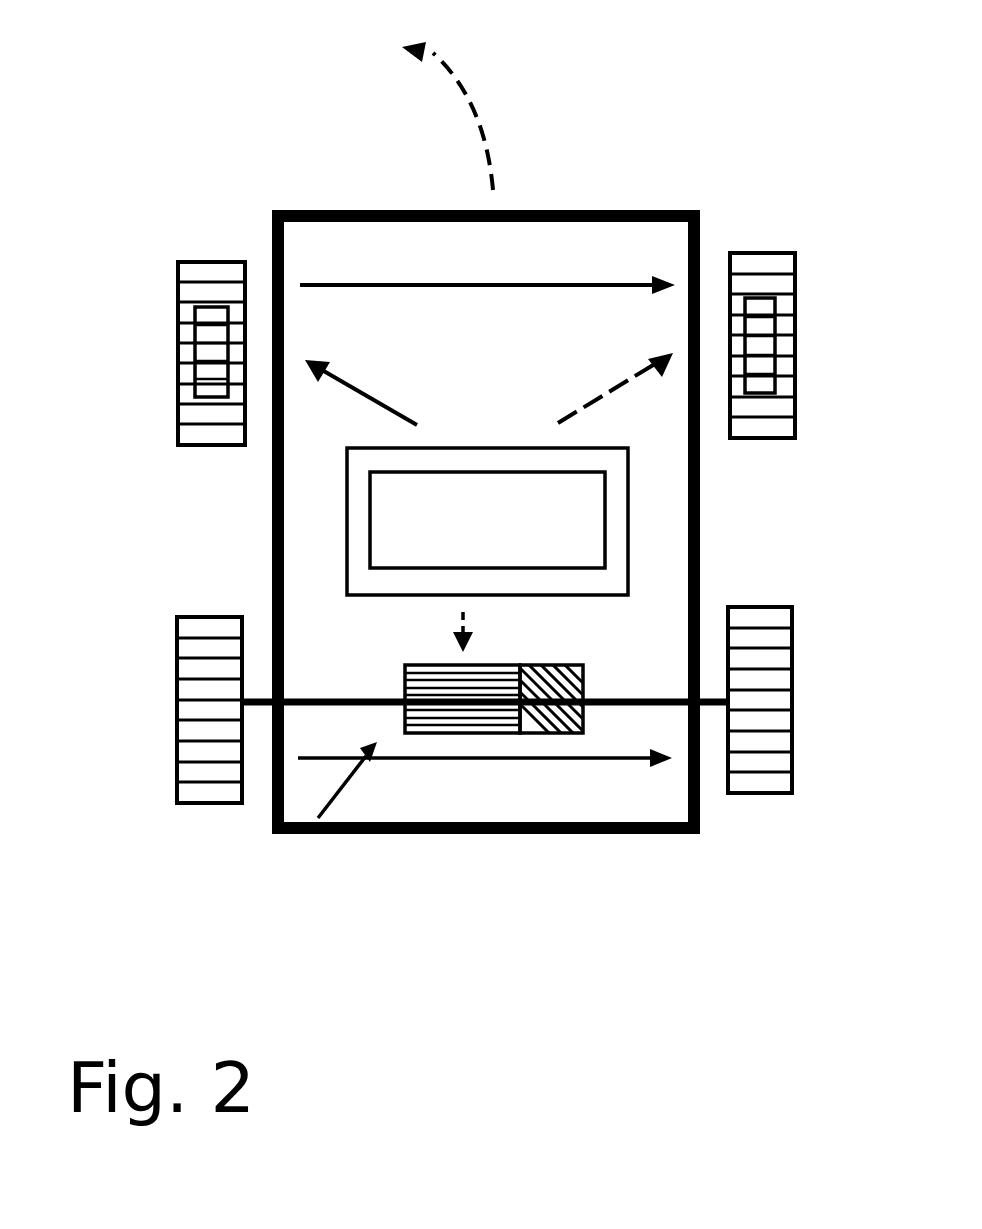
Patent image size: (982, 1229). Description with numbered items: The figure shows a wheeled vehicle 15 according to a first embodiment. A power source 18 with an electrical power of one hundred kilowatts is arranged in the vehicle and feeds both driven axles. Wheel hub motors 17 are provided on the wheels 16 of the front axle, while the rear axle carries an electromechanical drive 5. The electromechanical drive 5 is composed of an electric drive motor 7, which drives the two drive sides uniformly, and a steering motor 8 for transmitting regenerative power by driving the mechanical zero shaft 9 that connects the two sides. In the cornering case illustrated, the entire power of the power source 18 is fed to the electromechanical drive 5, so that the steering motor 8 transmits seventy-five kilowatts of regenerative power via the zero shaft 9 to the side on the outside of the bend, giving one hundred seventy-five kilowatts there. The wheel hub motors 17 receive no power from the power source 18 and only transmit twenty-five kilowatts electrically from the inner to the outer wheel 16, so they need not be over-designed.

The electromechanical drive 5 is at (297, 840).
The electric drive motor 7 is at (413, 740).
The steering motor 8 is at (555, 743).
The zero shaft 9 is at (628, 712).
The wheeled vehicle 15 is at (350, 210).
The wheels 16 is at (217, 255).
The wheel hub motors 17 is at (177, 295).
The power source 18 is at (383, 533).